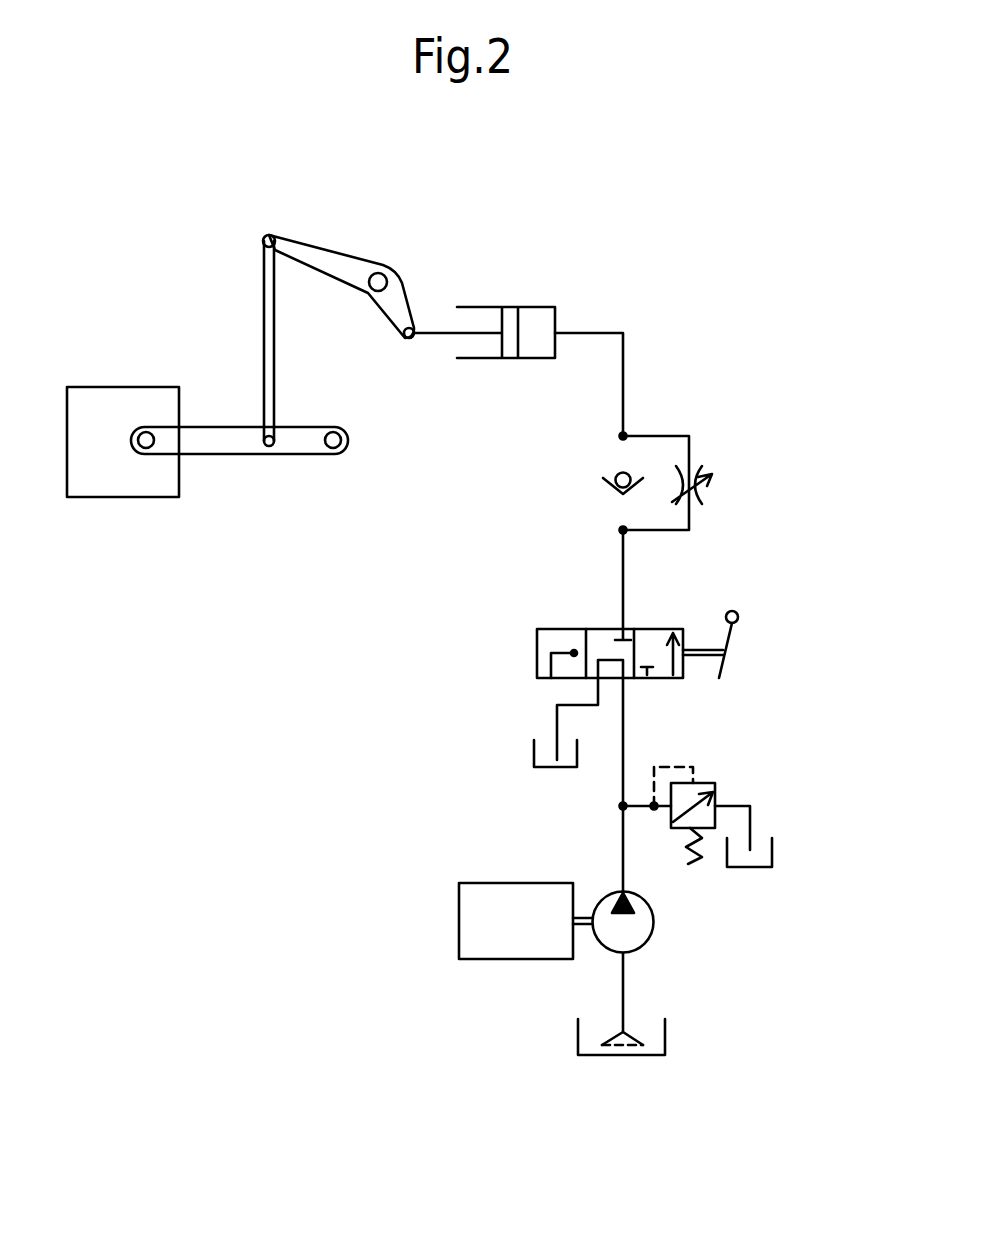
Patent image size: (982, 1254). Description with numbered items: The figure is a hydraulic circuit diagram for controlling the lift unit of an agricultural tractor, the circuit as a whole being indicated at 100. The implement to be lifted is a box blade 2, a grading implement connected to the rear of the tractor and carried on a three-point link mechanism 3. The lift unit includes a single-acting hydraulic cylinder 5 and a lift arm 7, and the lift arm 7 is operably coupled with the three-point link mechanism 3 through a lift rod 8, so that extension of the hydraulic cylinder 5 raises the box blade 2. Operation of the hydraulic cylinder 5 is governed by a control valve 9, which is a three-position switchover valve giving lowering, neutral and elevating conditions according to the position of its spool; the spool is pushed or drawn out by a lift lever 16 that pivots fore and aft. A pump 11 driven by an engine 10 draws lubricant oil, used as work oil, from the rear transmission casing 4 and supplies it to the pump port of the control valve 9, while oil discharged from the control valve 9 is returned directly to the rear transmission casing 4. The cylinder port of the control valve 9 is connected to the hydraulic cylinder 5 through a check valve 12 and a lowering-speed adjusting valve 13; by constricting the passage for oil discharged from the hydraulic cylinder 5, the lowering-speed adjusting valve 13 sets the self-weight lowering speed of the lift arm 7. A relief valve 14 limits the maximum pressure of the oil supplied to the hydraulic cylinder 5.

The box blade 2 is at (125, 516).
The three-point link mechanism 3 is at (247, 473).
The rear transmission casing 4 is at (578, 1040).
The single-acting hydraulic cylinder 5 is at (540, 307).
The lift arm 7 is at (332, 258).
The lift rod 8 is at (264, 317).
The control valve 9 is at (537, 652).
The engine 10 is at (459, 923).
The pump 11 is at (653, 922).
The check valve 12 is at (613, 487).
The lowering-speed adjusting valve 13 is at (700, 488).
The relief valve 14 is at (712, 783).
The lift lever 16 is at (733, 640).
The hydraulic circuit 100 is at (712, 250).